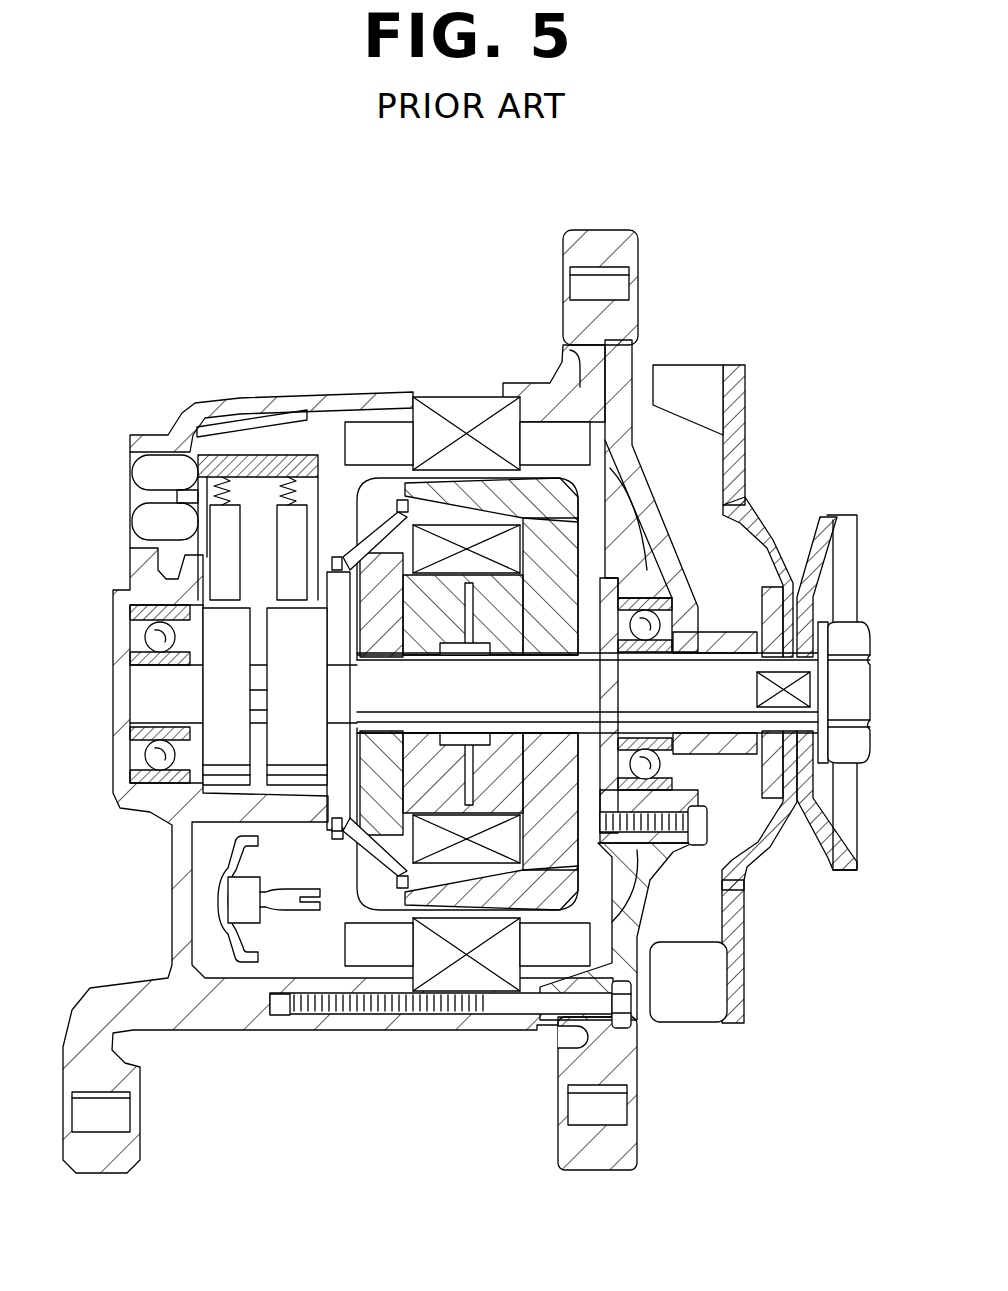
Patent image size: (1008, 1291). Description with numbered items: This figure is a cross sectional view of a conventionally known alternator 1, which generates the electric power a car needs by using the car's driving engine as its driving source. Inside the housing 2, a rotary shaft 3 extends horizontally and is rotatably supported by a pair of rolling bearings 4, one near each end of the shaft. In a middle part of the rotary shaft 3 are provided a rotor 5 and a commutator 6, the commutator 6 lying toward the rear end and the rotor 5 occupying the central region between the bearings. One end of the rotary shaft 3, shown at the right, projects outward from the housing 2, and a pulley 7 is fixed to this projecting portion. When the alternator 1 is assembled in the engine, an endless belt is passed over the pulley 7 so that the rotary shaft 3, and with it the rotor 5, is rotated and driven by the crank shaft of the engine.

The alternator 1 is at (658, 292).
The housing 2 is at (367, 1023).
The rotary shaft 3 is at (715, 668).
The rolling bearings 4 is at (140, 602).
The rotor 5 is at (390, 895).
The commutator 6 is at (222, 680).
The pulley 7 is at (830, 572).